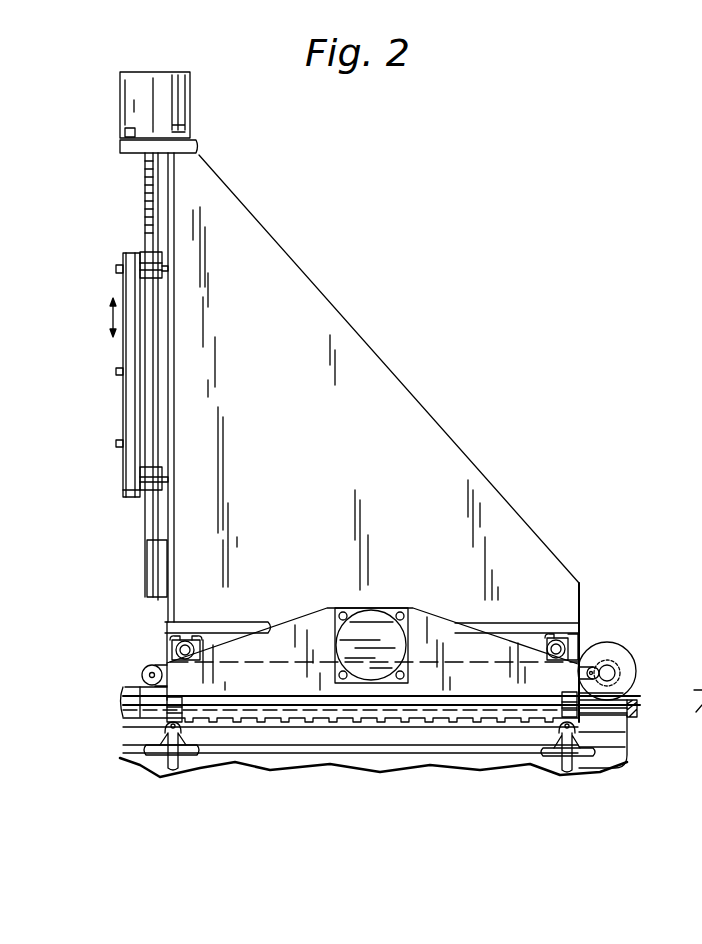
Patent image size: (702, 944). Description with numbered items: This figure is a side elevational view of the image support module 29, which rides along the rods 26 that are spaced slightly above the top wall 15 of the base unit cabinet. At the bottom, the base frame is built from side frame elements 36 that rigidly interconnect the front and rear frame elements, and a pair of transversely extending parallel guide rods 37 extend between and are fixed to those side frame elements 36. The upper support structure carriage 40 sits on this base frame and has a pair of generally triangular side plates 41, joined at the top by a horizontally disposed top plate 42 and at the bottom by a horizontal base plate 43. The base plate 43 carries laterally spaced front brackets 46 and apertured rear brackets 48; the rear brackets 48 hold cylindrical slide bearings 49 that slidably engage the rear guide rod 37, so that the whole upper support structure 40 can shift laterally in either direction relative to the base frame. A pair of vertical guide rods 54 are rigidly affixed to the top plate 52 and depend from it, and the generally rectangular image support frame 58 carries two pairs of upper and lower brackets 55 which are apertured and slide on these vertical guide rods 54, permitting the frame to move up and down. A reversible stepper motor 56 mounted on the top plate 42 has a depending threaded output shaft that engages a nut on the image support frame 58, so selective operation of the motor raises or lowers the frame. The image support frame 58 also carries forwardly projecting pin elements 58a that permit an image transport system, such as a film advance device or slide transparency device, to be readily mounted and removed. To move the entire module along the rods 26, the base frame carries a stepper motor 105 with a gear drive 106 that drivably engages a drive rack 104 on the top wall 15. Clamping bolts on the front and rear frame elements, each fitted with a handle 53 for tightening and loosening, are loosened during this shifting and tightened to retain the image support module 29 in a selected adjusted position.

The stepper motor 56 is at (190, 102).
The top plate 42 is at (199, 146).
The top plate 52 is at (132, 160).
The vertical guide rods 54 is at (152, 428).
The image support frame 58 is at (123, 495).
The pin elements 58a is at (118, 266).
The brackets 55 is at (165, 268).
The upper support structure carriage 40 is at (230, 202).
The side plates 41 is at (278, 268).
The image support module 29 is at (422, 340).
The base plate 43 is at (529, 625).
The side frame elements 36 is at (482, 660).
The guide rods 37 is at (188, 647).
The front brackets 46 is at (167, 640).
The slide bearings 49 is at (556, 640).
The rear brackets 48 is at (572, 632).
The stepper motor 105 is at (627, 658).
The gear drive 106 is at (620, 671).
The rods 26 is at (617, 700).
The top wall 15 is at (617, 745).
The drive rack 104 is at (365, 722).
The handle 53 is at (178, 763).